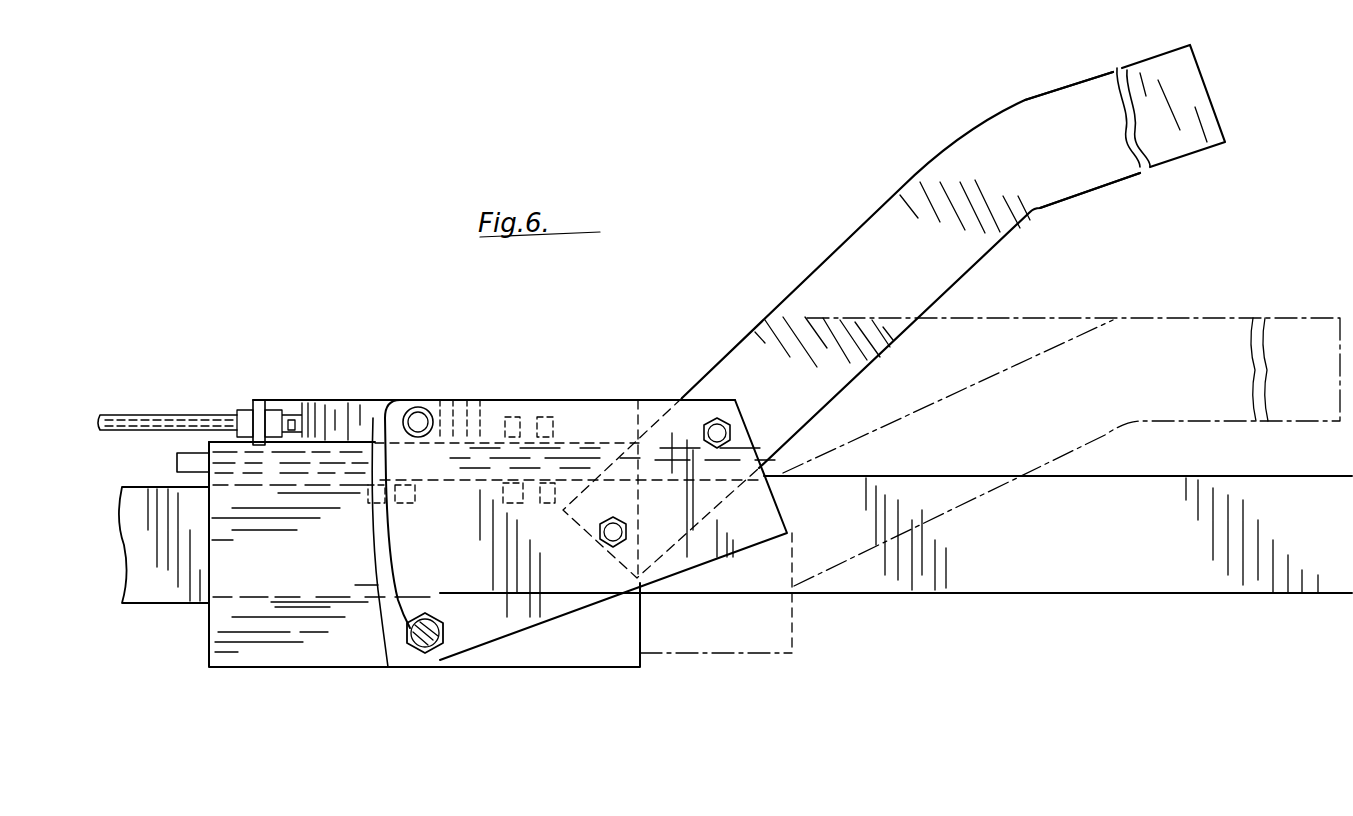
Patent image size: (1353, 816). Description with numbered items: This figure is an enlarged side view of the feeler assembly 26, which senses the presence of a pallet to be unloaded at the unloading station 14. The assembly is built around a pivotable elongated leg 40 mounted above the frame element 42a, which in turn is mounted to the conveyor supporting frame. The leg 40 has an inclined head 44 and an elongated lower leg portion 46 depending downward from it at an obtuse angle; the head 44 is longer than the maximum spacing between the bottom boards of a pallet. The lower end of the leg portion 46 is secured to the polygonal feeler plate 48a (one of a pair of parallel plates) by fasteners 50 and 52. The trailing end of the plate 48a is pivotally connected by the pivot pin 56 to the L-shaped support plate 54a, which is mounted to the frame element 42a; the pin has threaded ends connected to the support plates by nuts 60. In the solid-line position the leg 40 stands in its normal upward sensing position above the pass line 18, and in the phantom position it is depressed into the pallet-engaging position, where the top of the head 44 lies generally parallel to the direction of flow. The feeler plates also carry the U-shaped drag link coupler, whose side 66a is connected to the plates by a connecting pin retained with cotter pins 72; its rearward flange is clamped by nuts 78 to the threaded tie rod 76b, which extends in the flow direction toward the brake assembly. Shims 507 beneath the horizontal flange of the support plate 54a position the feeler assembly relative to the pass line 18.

The unloading station 14 is at (1032, 708).
The pass line 18 is at (1027, 317).
The feeler assembly 26 is at (707, 352).
The pivotable leg 40 is at (1160, 315).
The frame element 42a is at (1041, 584).
The inclined head 44 is at (1087, 87).
The lower leg portion 46 is at (830, 268).
The feeler plate 48a is at (600, 397).
The fastener 50 is at (730, 425).
The fastener 52 is at (608, 543).
The support plate 54a is at (283, 657).
The pivot pin 56 is at (437, 655).
The nut 60 is at (403, 633).
The side of U-shaped coupler 66a is at (343, 410).
The cotter pin 72 is at (423, 418).
The tie rod 76b is at (160, 418).
The nut 78 is at (278, 403).
The shim 507 is at (162, 471).